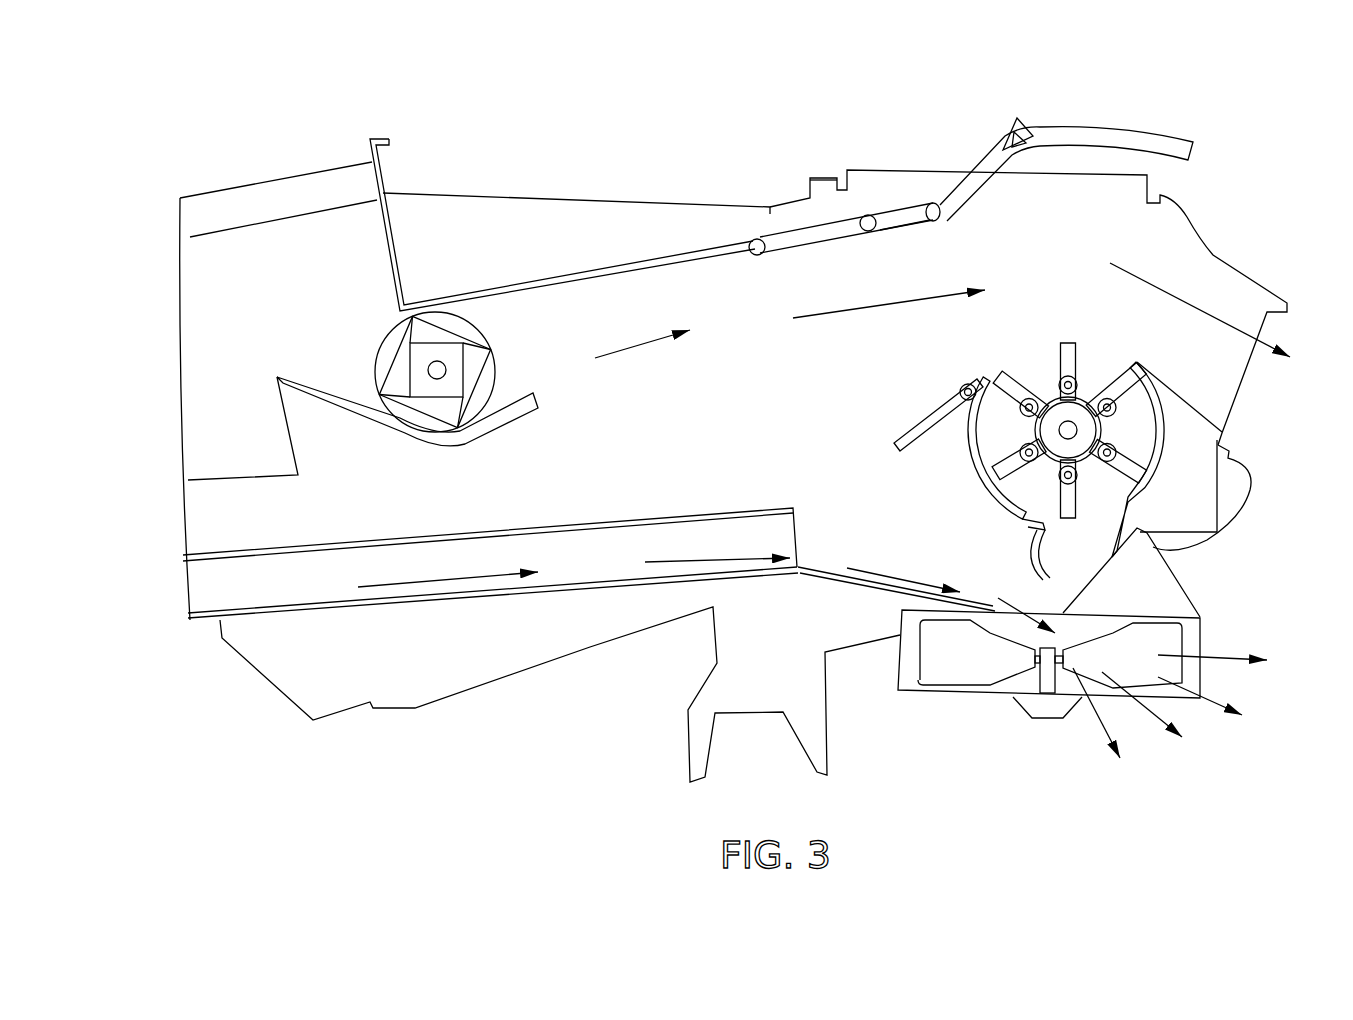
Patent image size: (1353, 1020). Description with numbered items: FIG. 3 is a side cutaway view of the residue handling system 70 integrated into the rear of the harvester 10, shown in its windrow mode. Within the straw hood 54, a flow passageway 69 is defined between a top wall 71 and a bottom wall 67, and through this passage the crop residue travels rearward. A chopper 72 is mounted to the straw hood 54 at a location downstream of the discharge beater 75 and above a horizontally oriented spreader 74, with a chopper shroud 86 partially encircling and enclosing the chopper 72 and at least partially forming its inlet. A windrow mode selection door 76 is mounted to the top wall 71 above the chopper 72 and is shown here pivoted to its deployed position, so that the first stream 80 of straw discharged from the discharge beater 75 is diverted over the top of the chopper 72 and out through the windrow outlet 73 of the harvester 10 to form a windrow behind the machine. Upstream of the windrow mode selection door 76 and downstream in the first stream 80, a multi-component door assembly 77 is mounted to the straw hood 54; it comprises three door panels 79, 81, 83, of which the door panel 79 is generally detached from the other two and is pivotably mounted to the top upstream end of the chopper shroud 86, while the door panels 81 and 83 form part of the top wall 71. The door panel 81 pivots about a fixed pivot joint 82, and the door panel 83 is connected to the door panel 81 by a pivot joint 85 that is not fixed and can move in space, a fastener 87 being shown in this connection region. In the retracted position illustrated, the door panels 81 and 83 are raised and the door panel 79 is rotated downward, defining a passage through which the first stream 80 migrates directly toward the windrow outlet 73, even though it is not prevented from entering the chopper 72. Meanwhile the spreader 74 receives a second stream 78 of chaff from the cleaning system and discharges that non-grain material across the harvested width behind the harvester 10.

The harvester 10 is at (1210, 192).
The straw hood 54 is at (857, 180).
The bottom wall 67 is at (817, 577).
The flow passageway 69 is at (748, 477).
The residue handling system 70 is at (568, 180).
The top wall 71 is at (667, 257).
The chopper 72 is at (1039, 388).
The windrow outlet 73 is at (1253, 407).
The spreader 74 is at (1212, 582).
The discharge beater 75 is at (377, 353).
The windrow mode selection door 76 is at (1110, 128).
The multi-component door assembly 77 is at (770, 188).
The second stream 78 is at (703, 558).
The door panel 79 is at (925, 425).
The first stream 80 is at (598, 362).
The door panel 81 is at (808, 240).
The fixed pivot joint 82 is at (757, 257).
The door panel 83 is at (908, 218).
The pivot joint 85 is at (870, 215).
The chopper shroud 86 is at (985, 490).
The fastener 87 is at (965, 383).